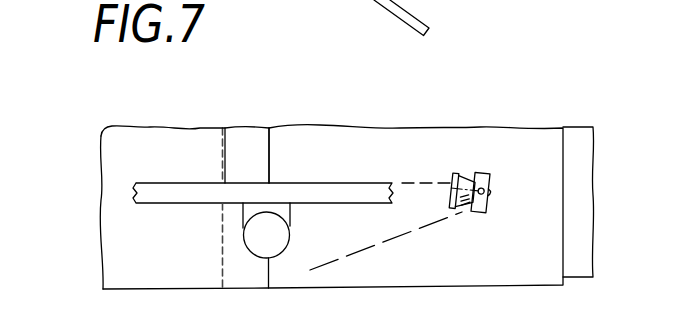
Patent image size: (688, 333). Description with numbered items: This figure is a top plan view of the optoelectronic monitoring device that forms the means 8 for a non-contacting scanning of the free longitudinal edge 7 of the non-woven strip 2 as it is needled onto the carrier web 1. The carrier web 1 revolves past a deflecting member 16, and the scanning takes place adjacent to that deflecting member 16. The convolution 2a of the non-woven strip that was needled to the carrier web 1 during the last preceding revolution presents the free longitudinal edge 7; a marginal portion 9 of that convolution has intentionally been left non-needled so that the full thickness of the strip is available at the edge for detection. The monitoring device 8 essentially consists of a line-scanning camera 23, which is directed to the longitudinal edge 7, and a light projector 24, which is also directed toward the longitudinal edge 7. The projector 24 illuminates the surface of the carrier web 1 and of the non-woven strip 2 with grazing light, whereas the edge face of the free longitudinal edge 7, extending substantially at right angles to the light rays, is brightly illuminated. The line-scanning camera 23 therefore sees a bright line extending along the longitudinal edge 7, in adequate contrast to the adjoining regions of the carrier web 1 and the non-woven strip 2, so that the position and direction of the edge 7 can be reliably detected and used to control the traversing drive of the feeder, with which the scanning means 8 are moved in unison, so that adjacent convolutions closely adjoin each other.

The carrier web 1 is at (457, 148).
The non-woven strip 2 is at (147, 123).
The convolution of the non-woven strip 2a is at (122, 231).
The free longitudinal edge 7 is at (268, 161).
The means for non-contacting scanning of the longitudinal edge 8 is at (279, 259).
The marginal portion of the non-woven strip 9 is at (248, 148).
The deflecting member 16 is at (577, 147).
The line-scanning camera 23 is at (265, 237).
The light projector 24 is at (470, 213).